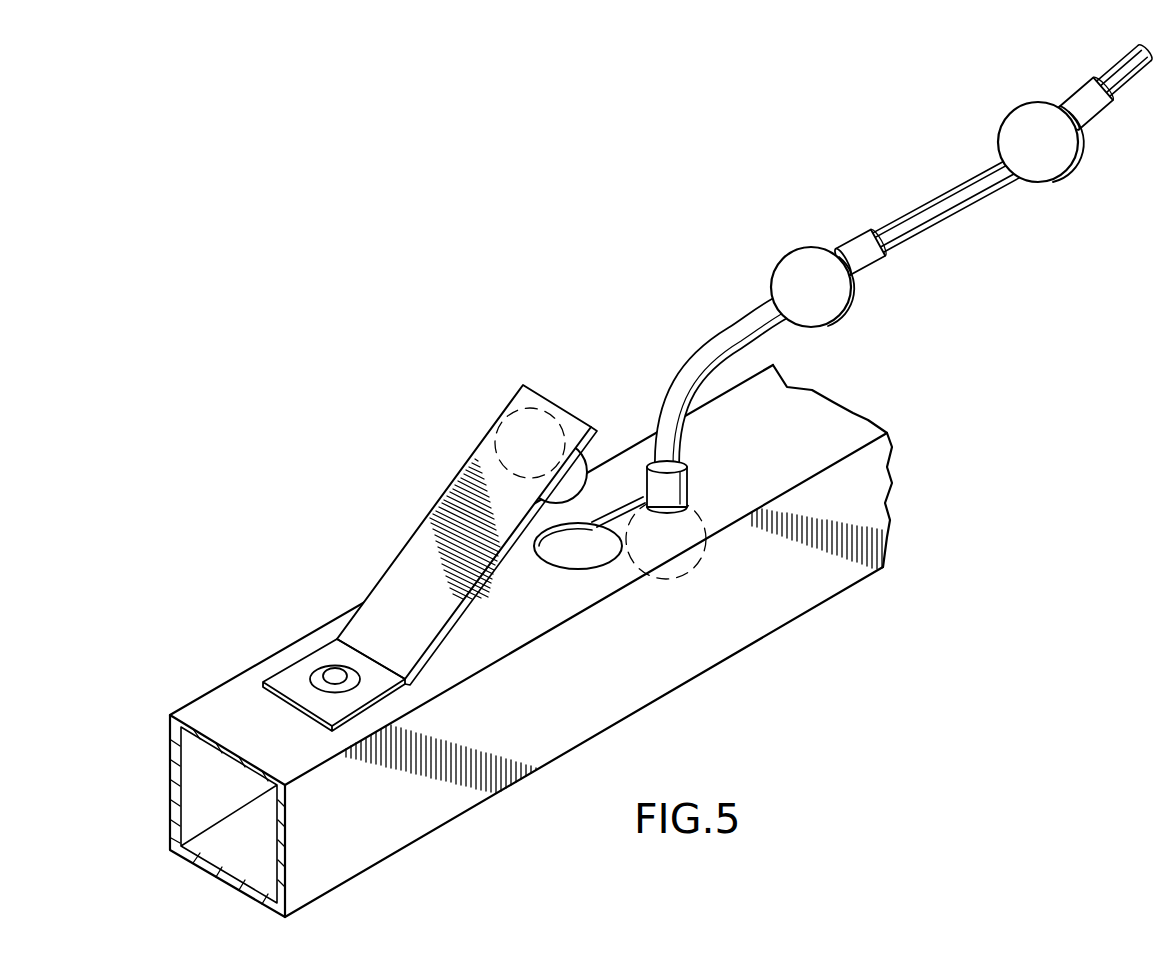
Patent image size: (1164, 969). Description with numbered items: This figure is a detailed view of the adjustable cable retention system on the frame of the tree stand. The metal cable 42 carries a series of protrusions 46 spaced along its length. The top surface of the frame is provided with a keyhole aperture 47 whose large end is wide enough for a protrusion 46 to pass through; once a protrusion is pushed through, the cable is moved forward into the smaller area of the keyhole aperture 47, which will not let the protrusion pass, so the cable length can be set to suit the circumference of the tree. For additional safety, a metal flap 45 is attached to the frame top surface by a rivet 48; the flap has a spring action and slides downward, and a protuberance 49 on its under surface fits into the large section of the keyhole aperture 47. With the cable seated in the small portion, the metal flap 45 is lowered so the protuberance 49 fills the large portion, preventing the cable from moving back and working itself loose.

The metal cable 42 is at (948, 199).
The metal flap 45 is at (422, 535).
The protrusions 46 is at (795, 257).
The keyhole aperture 47 is at (577, 548).
The rivet 48 is at (331, 672).
The protuberance 49 is at (588, 457).